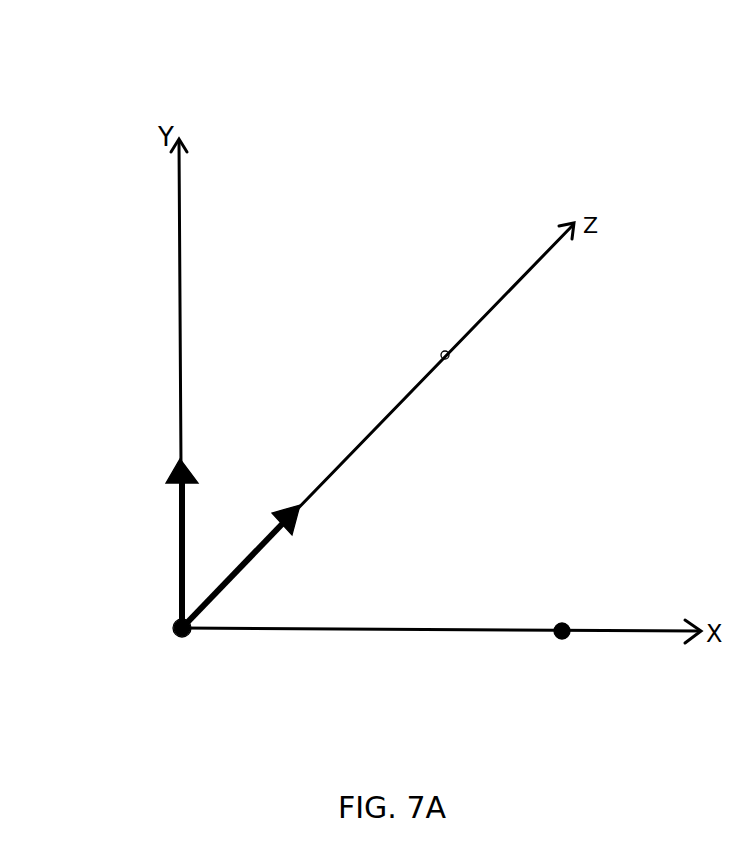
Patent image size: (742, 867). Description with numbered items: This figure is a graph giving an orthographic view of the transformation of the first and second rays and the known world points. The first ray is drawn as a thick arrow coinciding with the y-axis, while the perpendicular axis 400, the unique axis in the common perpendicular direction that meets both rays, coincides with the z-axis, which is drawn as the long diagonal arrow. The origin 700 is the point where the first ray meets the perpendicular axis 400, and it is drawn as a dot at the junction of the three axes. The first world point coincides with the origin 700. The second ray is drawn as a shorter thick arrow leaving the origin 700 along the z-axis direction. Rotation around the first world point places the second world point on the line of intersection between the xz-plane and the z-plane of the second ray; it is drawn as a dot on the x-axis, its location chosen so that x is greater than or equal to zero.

The perpendicular axis 400 is at (448, 358).
The origin 700 is at (183, 648).